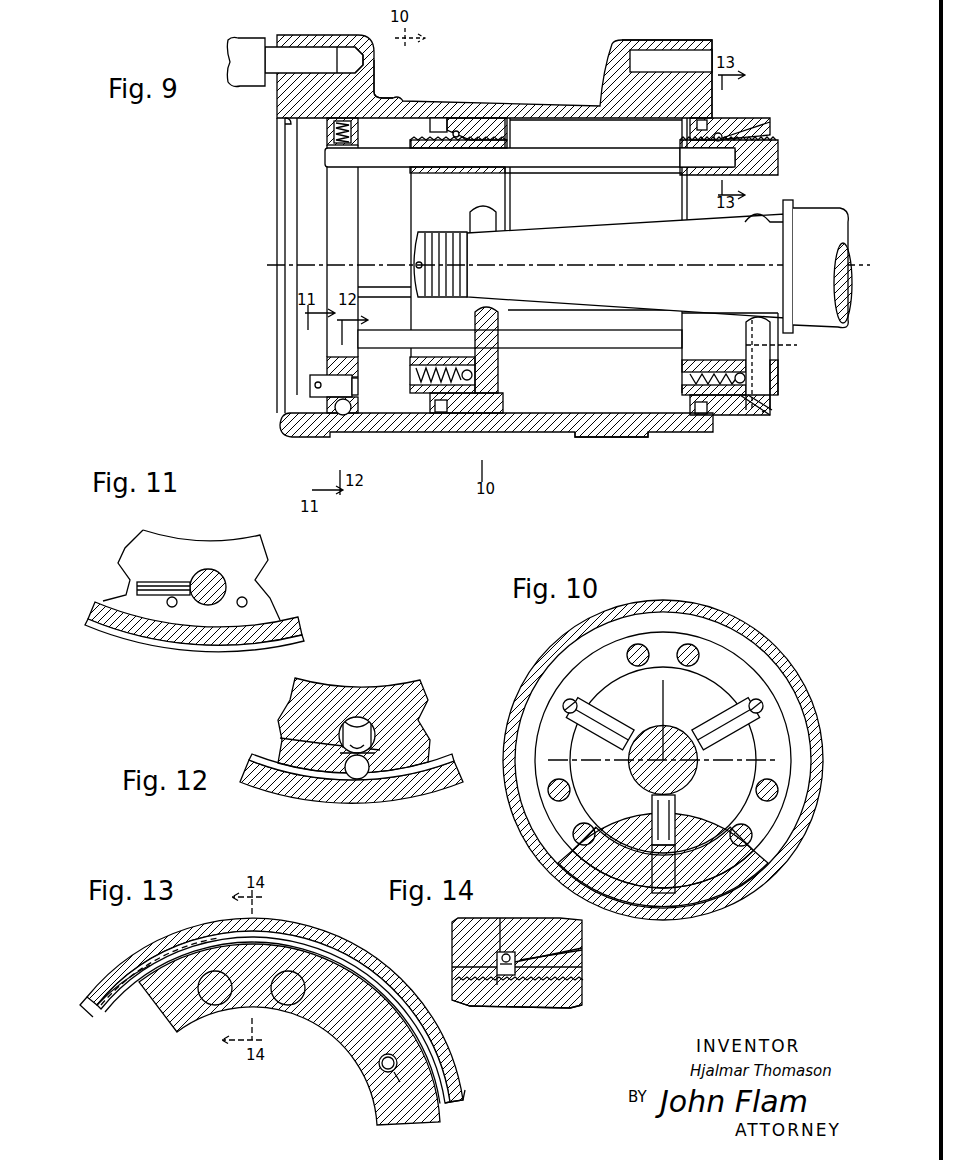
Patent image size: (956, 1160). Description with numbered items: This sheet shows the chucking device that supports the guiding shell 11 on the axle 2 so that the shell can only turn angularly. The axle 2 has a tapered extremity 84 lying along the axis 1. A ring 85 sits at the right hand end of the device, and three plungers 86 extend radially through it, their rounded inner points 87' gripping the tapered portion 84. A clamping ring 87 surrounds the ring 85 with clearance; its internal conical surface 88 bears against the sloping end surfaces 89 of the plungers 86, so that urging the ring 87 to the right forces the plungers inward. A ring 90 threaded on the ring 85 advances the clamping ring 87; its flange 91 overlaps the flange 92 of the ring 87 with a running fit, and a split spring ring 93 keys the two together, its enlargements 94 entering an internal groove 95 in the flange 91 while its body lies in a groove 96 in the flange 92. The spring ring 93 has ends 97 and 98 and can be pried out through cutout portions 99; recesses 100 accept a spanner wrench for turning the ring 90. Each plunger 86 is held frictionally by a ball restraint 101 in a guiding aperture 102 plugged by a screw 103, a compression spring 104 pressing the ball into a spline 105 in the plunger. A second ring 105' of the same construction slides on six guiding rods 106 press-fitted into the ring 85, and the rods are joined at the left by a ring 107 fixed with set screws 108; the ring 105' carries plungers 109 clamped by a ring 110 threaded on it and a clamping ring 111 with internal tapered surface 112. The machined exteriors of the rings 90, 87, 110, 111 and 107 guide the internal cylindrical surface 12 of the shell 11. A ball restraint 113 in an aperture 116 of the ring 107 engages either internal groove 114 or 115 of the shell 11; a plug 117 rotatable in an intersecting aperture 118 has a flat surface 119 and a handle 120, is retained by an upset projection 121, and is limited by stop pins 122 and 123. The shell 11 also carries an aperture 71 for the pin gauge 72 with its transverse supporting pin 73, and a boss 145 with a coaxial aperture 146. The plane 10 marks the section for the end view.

In FIG. 9, the axis 1 is at (820, 268).
In FIG. 10, the axis 1 is at (661, 765).
In FIG. 9, the axle 2 is at (820, 218).
In FIG. 9, the plane 10— 10 is at (290, 35).
In FIG. 9, the shell 11 is at (560, 425).
In FIG. 11, the shell 11 is at (222, 638).
In FIG. 12, the shell 11 is at (330, 790).
In FIG. 10, the shell 11 is at (740, 620).
In FIG. 9, the internal cylindrical surface 12 is at (622, 420).
In FIG. 10, the internal cylindrical surface 12 is at (756, 660).
In FIG. 9, the aperture 71 is at (346, 60).
In FIG. 9, the pin gauge 72 is at (248, 48).
In FIG. 9, the transverse supporting pin 73 is at (308, 55).
In FIG. 9, the tapered extremity 84 is at (612, 242).
In FIG. 10, the tapered extremity 84 is at (666, 745).
In FIG. 9, the ring 85 is at (778, 162).
In FIG. 10, the ring 85 is at (663, 857).
In FIG. 13, the ring 85 is at (328, 1022).
In FIG. 14, the ring 85 is at (568, 1004).
In FIG. 9, the plungers 86 is at (770, 216).
In FIG. 9, the clamping ring 87 is at (735, 113).
In FIG. 14, the clamping ring 87 is at (517, 950).
In FIG. 9, the rounded inner points 87' is at (755, 342).
In FIG. 9, the internal conical surface 88 is at (760, 130).
In FIG. 14, the internal conical surface 88 is at (582, 966).
In FIG. 9, the sloping end surfaces 89 is at (756, 406).
In FIG. 9, the ring 90 is at (706, 122).
In FIG. 14, the ring 90 is at (466, 925).
In FIG. 13, the flange 91 is at (268, 930).
In FIG. 14, the flange 91 is at (518, 930).
In FIG. 13, the flange 92 is at (135, 1000).
In FIG. 14, the flange 92 is at (500, 986).
In FIG. 13, the spring ring 93 is at (345, 958).
In FIG. 14, the spring ring 93 is at (516, 980).
In FIG. 13, the enlargements 94 is at (460, 1086).
In FIG. 14, the internal groove 95 is at (504, 952).
In FIG. 14, the groove 96 is at (498, 966).
In FIG. 13, the end 97 is at (386, 975).
In FIG. 14, the end 98 is at (456, 988).
In FIG. 13, the cutout portions 99 is at (152, 968).
In FIG. 9, the recesses 100 is at (700, 425).
In FIG. 9, the ball restraint 101 is at (726, 372).
In FIG. 13, the ball restraint 101 is at (380, 1070).
In FIG. 9, the guiding aperture 102 is at (700, 362).
In FIG. 13, the guiding aperture 102 is at (395, 1078).
In FIG. 9, the screw 103 is at (690, 386).
In FIG. 9, the compression spring 104 is at (734, 397).
In FIG. 9, the spline 105 is at (789, 346).
In FIG. 9, the ring 105' is at (483, 168).
In FIG. 10, the ring 105' is at (714, 760).
In FIG. 9, the guiding rods 106 is at (600, 152).
In FIG. 10, the guiding rods 106 is at (688, 645).
In FIG. 13, the guiding rods 106 is at (213, 1008).
In FIG. 9, the ring 107 is at (330, 142).
In FIG. 11, the ring 107 is at (220, 545).
In FIG. 12, the ring 107 is at (330, 700).
In FIG. 9, the set screws 108 is at (334, 128).
In FIG. 9, the plungers 109 is at (492, 340).
In FIG. 10, the plungers 109 is at (676, 830).
In FIG. 9, the ring 110 is at (438, 118).
In FIG. 9, the clamping ring 111 is at (470, 128).
In FIG. 9, the internal tapered surface 112 is at (530, 118).
In FIG. 9, the ball restraint 113 is at (346, 410).
In FIG. 12, the ball restraint 113 is at (362, 777).
In FIG. 9, the internal groove 114 is at (372, 110).
In FIG. 12, the internal groove 114 is at (445, 756).
In FIG. 9, the internal groove 115 is at (283, 124).
In FIG. 12, the aperture 116 is at (375, 748).
In FIG. 9, the plug 117 is at (312, 382).
In FIG. 11, the plug 117 is at (205, 570).
In FIG. 12, the plug 117 is at (368, 730).
In FIG. 9, the aperture 118 is at (352, 380).
In FIG. 12, the aperture 118 is at (300, 738).
In FIG. 9, the flat surface 119 is at (340, 366).
In FIG. 12, the flat surface 119 is at (360, 722).
In FIG. 9, the handle 120 is at (318, 392).
In FIG. 11, the handle 120 is at (145, 596).
In FIG. 9, the upset projection 121 is at (358, 388).
In FIG. 11, the stop pin 122 is at (172, 608).
In FIG. 11, the stop pin 123 is at (243, 608).
In FIG. 9, the boss 145 is at (693, 40).
In FIG. 9, the aperture 146 is at (655, 60).